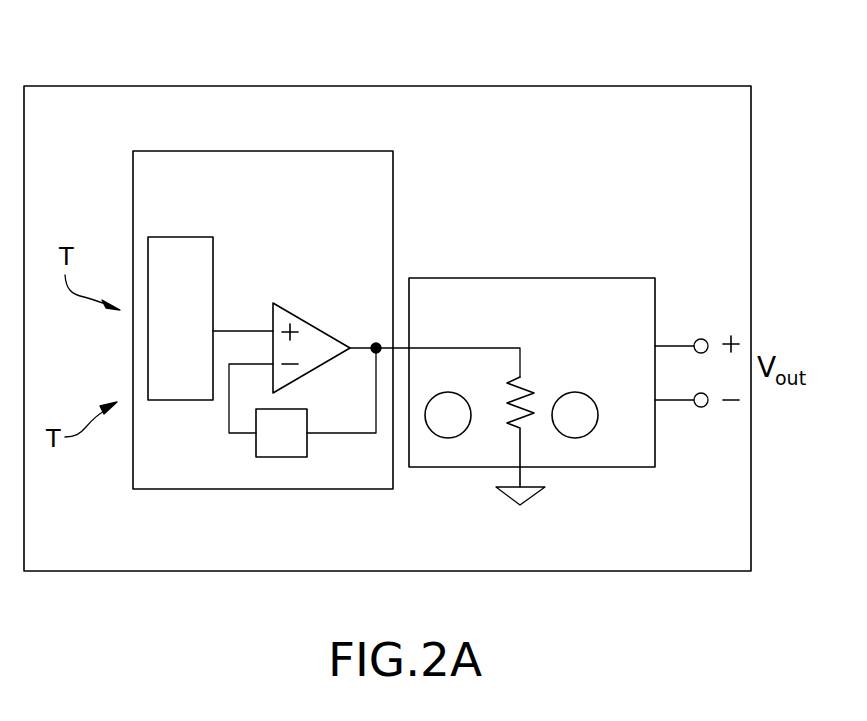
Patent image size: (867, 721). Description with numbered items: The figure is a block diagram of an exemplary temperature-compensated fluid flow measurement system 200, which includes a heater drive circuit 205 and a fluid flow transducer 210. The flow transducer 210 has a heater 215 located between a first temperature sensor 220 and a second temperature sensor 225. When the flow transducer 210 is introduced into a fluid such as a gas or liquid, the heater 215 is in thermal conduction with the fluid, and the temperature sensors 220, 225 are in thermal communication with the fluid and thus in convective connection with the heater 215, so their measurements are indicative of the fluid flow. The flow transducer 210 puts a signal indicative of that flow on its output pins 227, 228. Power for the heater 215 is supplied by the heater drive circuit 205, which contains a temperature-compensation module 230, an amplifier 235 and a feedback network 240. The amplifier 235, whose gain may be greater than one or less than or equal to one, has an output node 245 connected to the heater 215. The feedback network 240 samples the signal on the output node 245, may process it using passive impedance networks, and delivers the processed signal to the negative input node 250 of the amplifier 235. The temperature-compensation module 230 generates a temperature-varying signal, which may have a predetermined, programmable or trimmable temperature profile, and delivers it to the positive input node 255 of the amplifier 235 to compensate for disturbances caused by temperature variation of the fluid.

The temperature-compensated fluid flow measurement system 200 is at (165, 86).
The heater drive circuit 205 is at (292, 151).
The fluid flow transducer 210 is at (553, 278).
The heater 215 is at (533, 392).
The first temperature sensor 220 is at (457, 437).
The second temperature sensor 225 is at (580, 437).
The output pin 227 is at (702, 338).
The output pin 228 is at (702, 408).
The temperature-compensation module 230 is at (203, 334).
The amplifier 235 is at (313, 325).
The feedback network 240 is at (265, 457).
The output node 245 is at (401, 347).
The negative input node 250 is at (229, 407).
The positive input node 255 is at (246, 331).